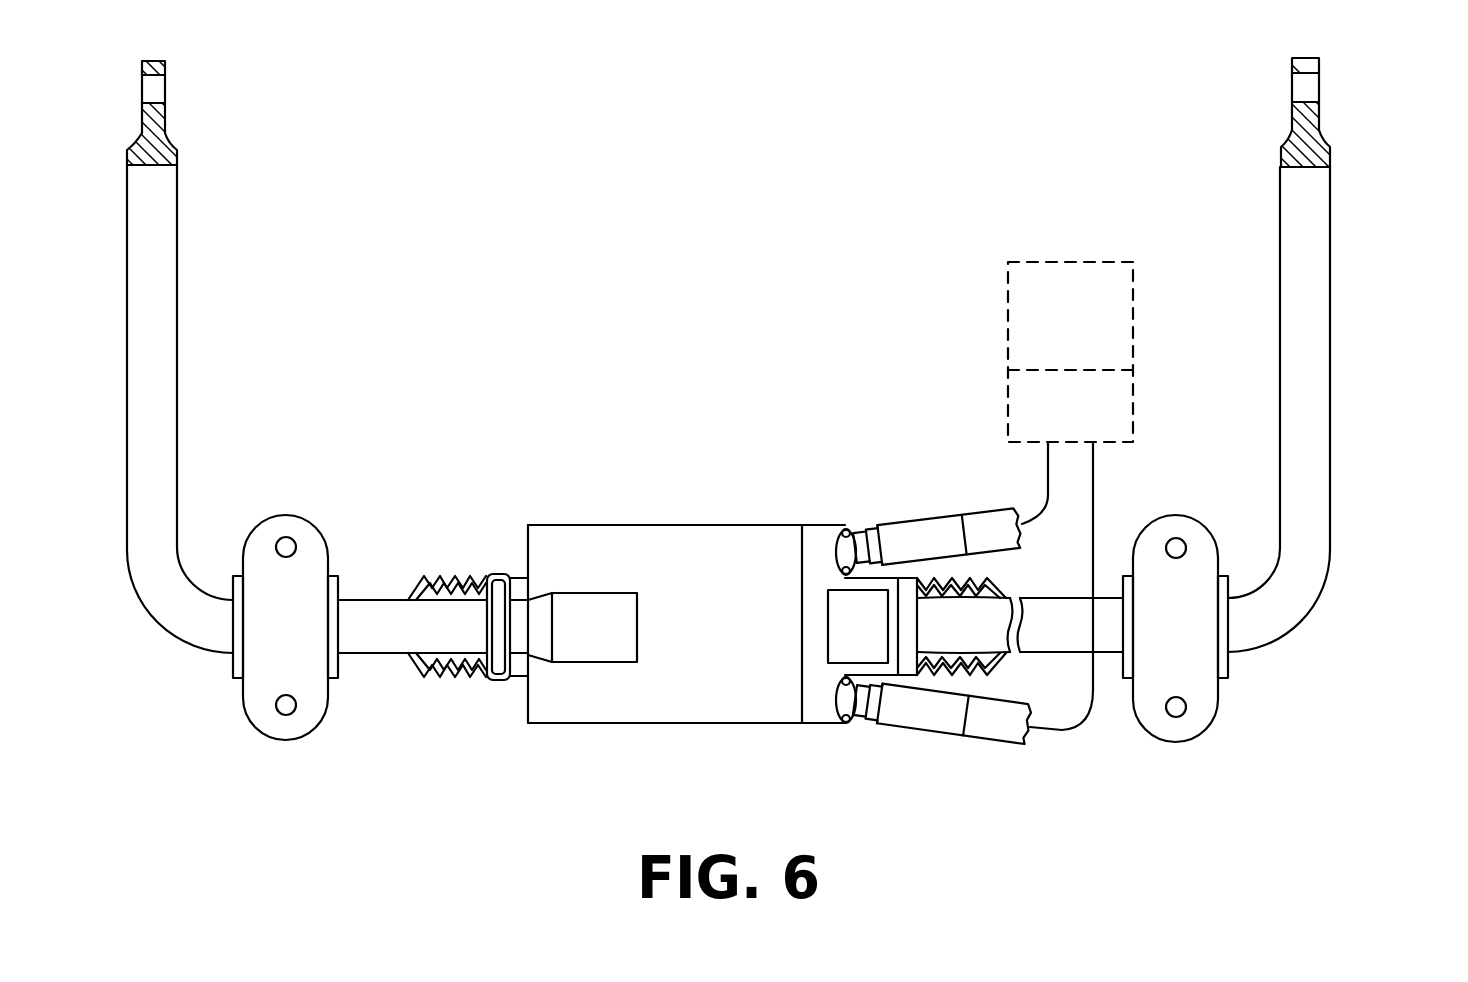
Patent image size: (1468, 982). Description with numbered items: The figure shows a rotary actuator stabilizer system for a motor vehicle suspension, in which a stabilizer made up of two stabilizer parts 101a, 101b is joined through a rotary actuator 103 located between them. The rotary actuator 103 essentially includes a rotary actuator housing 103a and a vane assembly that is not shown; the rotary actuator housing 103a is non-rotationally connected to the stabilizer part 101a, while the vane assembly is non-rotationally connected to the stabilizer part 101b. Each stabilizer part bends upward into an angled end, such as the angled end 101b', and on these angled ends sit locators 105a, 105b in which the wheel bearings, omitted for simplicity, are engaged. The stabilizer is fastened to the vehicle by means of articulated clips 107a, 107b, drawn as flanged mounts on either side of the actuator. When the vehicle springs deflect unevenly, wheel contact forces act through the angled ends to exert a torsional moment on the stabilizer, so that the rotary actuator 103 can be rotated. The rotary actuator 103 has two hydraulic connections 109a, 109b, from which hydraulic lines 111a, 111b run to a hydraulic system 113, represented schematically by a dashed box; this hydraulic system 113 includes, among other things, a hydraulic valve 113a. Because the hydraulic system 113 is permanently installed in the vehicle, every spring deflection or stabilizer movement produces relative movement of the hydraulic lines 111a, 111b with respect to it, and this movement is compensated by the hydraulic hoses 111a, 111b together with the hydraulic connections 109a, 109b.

The stabilizer part 101a is at (1110, 640).
The stabilizer part 101b is at (433, 673).
The angled end 101b' is at (213, 409).
The rotary actuator 103 is at (600, 723).
The rotary actuator housing 103a is at (717, 540).
The locator 105a is at (1312, 85).
The locator 105b is at (157, 87).
The articulated clip 107a is at (1203, 710).
The articulated clip 107b is at (253, 710).
The hydraulic connection 109a is at (863, 710).
The hydraulic connection 109b is at (855, 538).
The hydraulic line 111a is at (947, 722).
The hydraulic line 111b is at (932, 533).
The hydraulic system 113 is at (925, 326).
The hydraulic valve 113a is at (1105, 394).